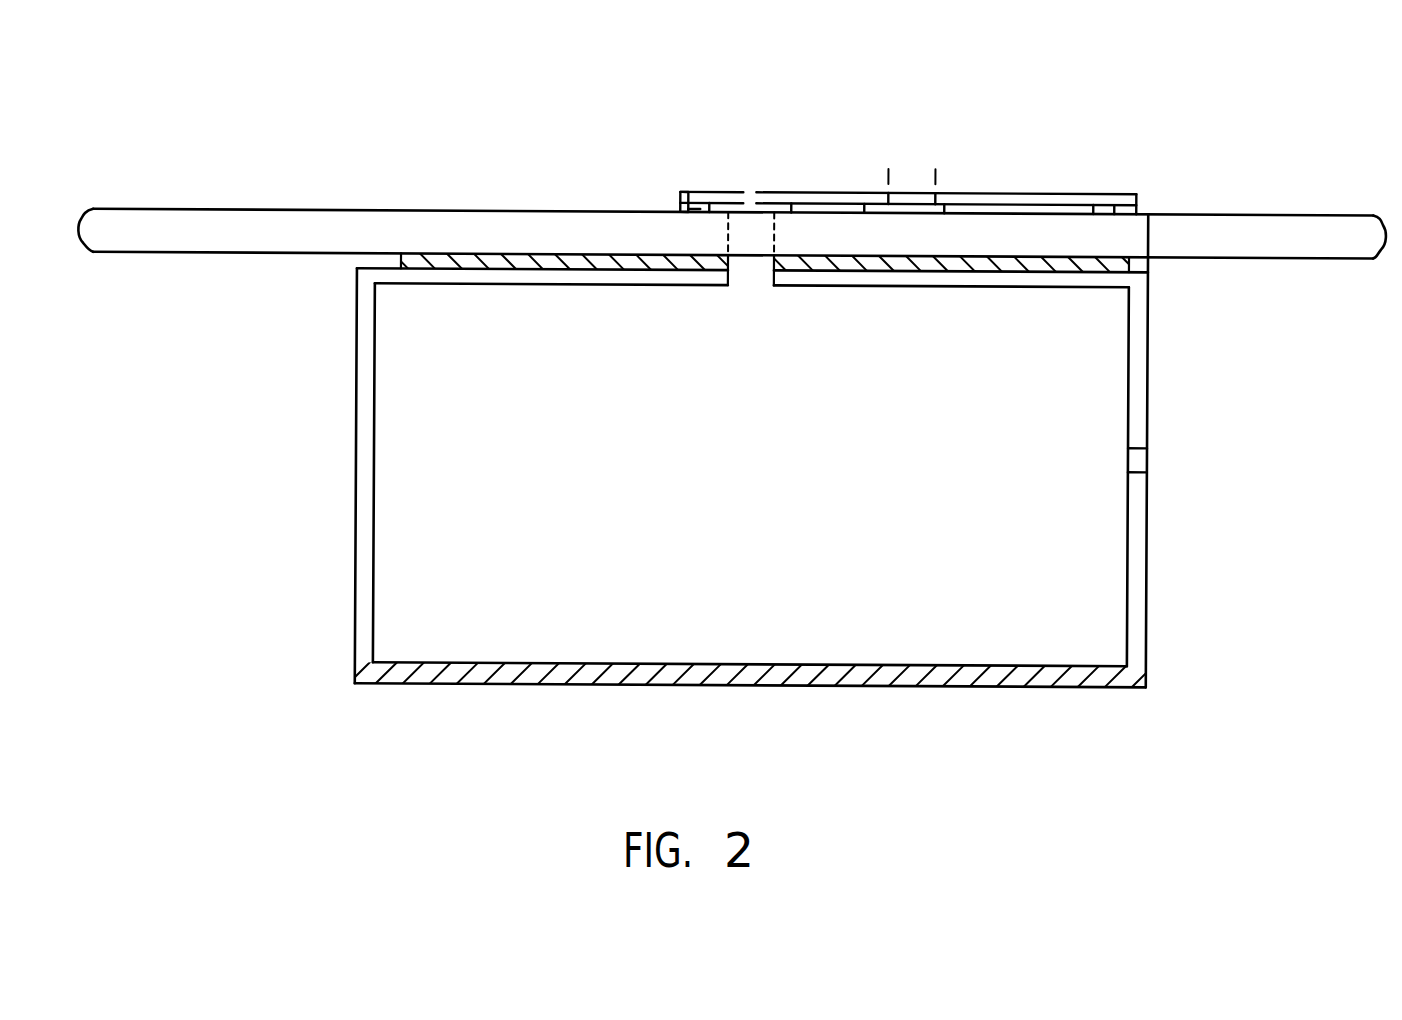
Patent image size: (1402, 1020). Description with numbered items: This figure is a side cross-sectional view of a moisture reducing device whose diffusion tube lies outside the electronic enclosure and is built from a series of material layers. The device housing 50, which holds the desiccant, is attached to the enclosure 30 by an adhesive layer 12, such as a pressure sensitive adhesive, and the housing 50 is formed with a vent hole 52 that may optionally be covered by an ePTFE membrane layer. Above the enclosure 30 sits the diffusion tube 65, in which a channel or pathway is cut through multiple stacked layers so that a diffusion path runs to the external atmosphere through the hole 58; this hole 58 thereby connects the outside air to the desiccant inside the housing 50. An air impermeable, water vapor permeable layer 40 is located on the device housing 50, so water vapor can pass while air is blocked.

The enclosure 30 is at (261, 230).
The hole 58 is at (905, 187).
The diffusion tube 65 is at (690, 208).
The adhesive layer 12 is at (1118, 262).
The housing 50 is at (1135, 373).
The vent hole 52 is at (1115, 458).
The air impermeable, water vapor permeable layer 40 is at (1121, 688).